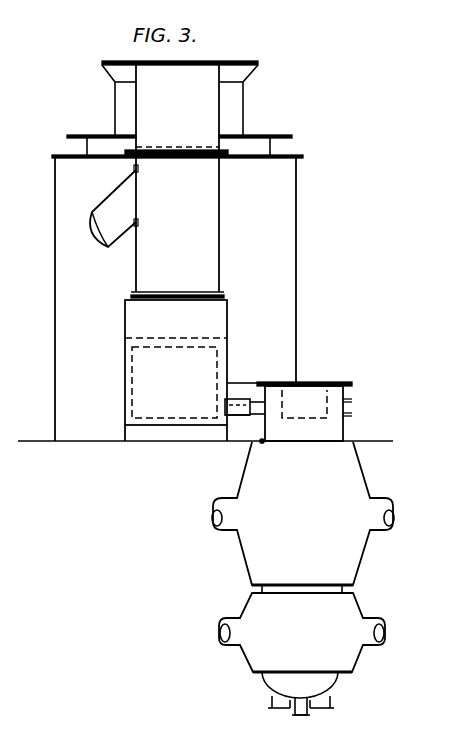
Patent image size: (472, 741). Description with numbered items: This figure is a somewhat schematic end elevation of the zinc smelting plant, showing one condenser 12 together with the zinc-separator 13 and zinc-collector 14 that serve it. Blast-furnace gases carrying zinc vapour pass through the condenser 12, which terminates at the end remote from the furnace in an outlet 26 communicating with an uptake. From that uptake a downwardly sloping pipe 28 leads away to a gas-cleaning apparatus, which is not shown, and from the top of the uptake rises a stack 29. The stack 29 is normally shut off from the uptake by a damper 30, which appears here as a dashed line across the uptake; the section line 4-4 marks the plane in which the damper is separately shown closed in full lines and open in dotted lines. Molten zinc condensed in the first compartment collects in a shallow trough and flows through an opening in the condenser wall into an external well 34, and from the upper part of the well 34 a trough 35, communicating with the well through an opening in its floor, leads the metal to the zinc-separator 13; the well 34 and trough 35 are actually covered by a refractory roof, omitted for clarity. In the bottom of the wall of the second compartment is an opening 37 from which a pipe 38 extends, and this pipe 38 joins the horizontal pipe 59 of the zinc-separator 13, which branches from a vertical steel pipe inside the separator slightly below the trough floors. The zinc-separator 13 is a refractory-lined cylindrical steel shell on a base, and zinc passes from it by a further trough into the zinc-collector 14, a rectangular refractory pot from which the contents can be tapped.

The section line 4- 4 is at (79, 148).
The condenser 12 is at (120, 412).
The zinc-separator 13 is at (242, 556).
The zinc-collector 14 is at (348, 400).
The outlet 26 is at (215, 331).
The downwardly sloping pipe 28 is at (102, 218).
The stack 29 is at (167, 77).
The damper 30 is at (165, 145).
The external well 34 is at (248, 420).
The trough 35 is at (231, 381).
The opening 37 is at (224, 405).
The pipe 38 is at (236, 417).
The horizontal pipe 59 is at (250, 414).